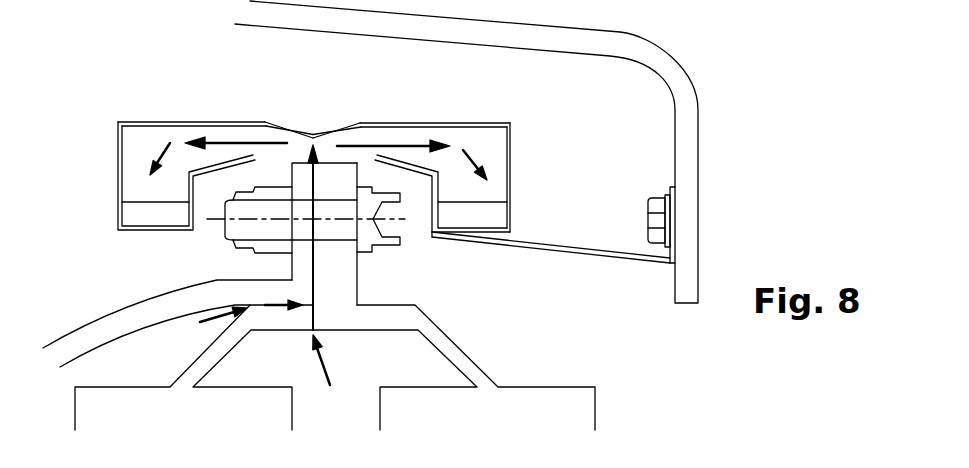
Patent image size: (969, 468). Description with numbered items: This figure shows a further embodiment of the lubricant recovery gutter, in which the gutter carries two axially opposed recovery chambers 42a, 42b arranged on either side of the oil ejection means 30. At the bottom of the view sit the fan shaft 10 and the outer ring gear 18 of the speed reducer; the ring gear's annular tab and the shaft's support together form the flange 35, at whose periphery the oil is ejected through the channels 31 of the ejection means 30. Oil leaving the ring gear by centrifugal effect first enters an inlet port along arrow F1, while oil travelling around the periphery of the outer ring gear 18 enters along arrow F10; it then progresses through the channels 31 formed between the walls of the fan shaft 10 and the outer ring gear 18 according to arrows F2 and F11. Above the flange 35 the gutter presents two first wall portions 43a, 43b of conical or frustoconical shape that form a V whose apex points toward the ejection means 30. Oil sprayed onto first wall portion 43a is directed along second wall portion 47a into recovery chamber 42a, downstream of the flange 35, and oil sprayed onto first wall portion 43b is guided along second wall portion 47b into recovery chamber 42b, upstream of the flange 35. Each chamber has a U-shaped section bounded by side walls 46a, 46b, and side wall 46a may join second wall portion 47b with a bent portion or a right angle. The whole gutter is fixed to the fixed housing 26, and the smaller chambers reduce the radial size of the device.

The fan shaft 10 is at (97, 327).
The outer ring gear 18 is at (460, 352).
The fixed housing 26 is at (679, 78).
The oil ejection means 30 is at (284, 265).
The channels 31 is at (313, 282).
The flange 35 is at (366, 292).
The recovery chamber 42a is at (477, 193).
The recovery chamber 42b is at (143, 192).
The first wall portion 43a is at (333, 127).
The first wall portion 43b is at (293, 127).
The first side wall 46a is at (507, 190).
The second side wall 46b is at (438, 197).
The second wall portion 47a is at (432, 123).
The second wall portion 47b is at (170, 121).
The arrow F1 is at (330, 383).
The arrow F2 is at (313, 250).
The arrow F10 is at (207, 310).
The arrow F11 is at (273, 305).